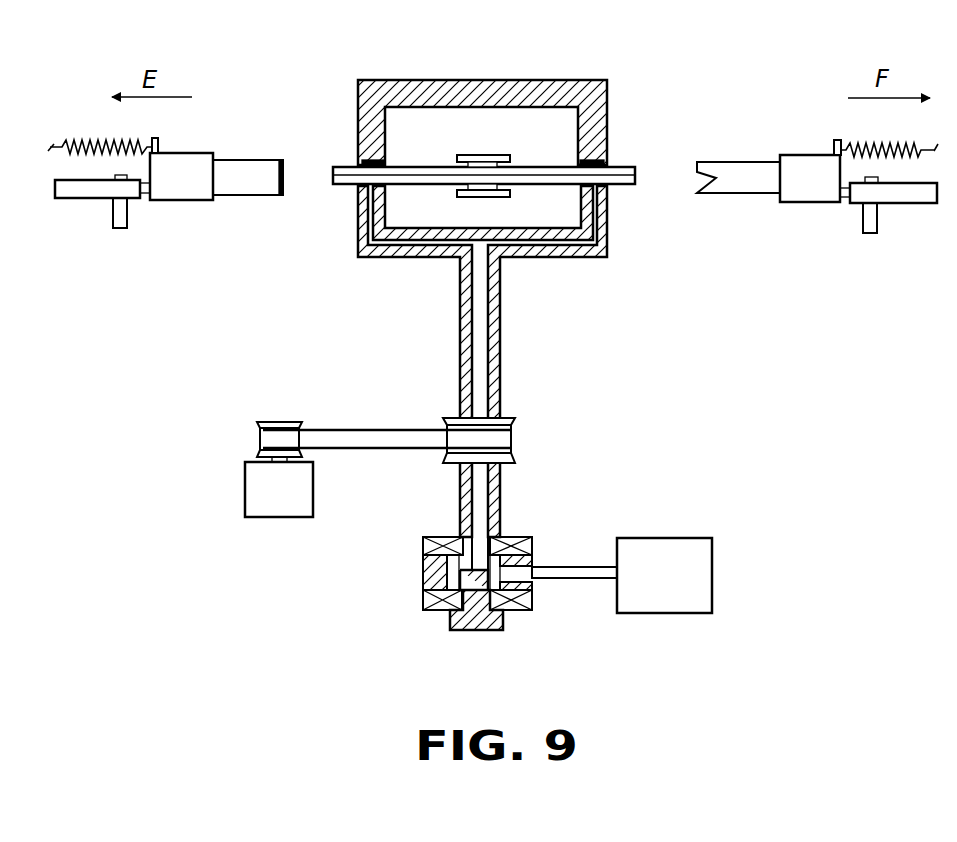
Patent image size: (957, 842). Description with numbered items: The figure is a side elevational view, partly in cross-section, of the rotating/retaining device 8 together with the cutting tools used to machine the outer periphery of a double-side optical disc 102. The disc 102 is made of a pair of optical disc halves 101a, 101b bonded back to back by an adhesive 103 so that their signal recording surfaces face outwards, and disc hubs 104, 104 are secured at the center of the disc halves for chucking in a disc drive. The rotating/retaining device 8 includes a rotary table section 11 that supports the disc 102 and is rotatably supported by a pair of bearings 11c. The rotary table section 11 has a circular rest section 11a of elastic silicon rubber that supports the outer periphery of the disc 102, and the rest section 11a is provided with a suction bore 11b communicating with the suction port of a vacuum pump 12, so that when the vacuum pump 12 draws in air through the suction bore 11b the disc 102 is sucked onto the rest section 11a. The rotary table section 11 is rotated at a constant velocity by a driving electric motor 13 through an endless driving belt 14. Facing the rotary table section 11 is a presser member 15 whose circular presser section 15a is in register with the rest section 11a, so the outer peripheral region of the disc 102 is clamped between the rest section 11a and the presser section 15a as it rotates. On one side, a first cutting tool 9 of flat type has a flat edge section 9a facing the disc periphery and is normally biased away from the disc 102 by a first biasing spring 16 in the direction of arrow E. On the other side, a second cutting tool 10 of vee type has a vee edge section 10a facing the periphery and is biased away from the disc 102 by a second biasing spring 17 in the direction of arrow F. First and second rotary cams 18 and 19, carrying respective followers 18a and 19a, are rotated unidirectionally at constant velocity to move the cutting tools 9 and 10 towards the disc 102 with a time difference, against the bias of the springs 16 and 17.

The rotating/retaining device 8 is at (622, 86).
The first cutting tool 9 is at (233, 163).
The flat edge section 9a is at (283, 180).
The second cutting tool 10 is at (743, 173).
The vee edge section 10a is at (697, 173).
The rotary table section 11 is at (561, 258).
The rest section 11a is at (346, 186).
The suction bore 11b is at (370, 255).
The bearings 11c is at (423, 546).
The vacuum pump 12 is at (657, 548).
The driving electric motor 13 is at (291, 512).
The endless driving belt 14 is at (361, 430).
The presser member 15 is at (553, 92).
The presser section 15a is at (358, 162).
The first biasing spring 16 is at (93, 139).
The second biasing spring 17 is at (883, 143).
The first rotary cam 18 is at (82, 197).
The lever pin 18a is at (123, 218).
The second rotary cam 19 is at (920, 204).
The lever pin 19a is at (863, 223).
The optical disc half 101a is at (622, 190).
The optical disc half 101b is at (620, 165).
The double-side optical disc 102 is at (652, 192).
The adhesive 103 is at (634, 168).
The disc hubs 104 is at (500, 156).